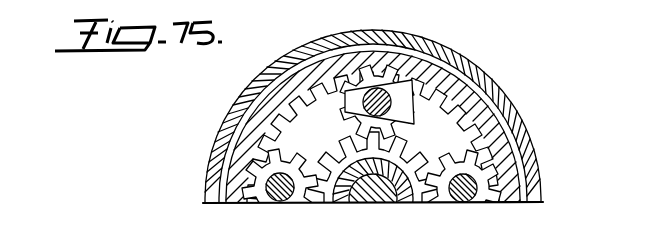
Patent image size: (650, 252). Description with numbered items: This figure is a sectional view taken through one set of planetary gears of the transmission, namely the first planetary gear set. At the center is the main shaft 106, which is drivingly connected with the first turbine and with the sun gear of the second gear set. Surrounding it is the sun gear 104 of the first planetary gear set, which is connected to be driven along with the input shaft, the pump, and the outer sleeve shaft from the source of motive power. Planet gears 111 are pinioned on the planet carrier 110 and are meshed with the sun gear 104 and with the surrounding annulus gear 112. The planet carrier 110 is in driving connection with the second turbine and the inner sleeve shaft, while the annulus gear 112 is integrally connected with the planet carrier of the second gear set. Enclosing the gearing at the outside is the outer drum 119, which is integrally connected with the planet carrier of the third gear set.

The sun gear 104 is at (423, 150).
The main shaft 106 is at (360, 196).
The planet carrier 110 is at (283, 197).
The planet gears 111 is at (352, 114).
The annulus gear 112 is at (432, 64).
The outer drum 119 is at (296, 46).